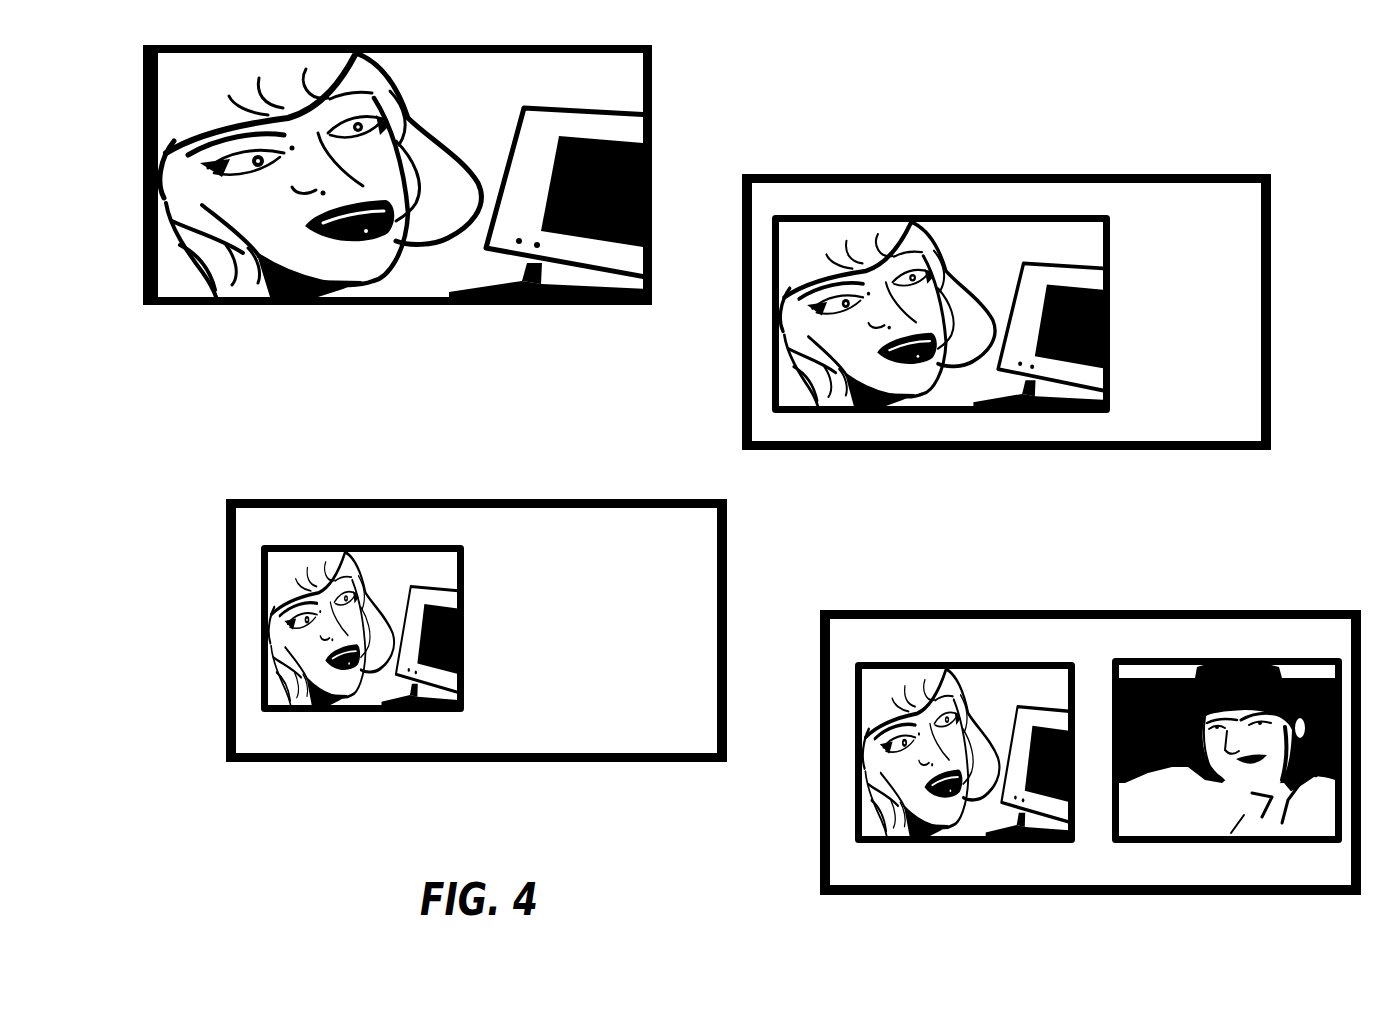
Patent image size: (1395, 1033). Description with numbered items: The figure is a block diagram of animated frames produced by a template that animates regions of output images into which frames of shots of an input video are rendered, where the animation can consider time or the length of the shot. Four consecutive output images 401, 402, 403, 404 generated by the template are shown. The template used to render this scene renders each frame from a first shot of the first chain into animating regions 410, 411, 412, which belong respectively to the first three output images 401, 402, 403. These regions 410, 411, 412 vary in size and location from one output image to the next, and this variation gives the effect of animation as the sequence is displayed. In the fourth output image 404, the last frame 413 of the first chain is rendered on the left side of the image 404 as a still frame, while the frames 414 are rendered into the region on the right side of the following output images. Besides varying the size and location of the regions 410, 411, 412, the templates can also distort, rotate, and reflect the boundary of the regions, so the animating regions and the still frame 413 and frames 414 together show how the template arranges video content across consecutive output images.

The output image 401 is at (143, 202).
The animating region 410 is at (252, 284).
The output image 402 is at (742, 342).
The animating region 411 is at (781, 413).
The output image 403 is at (226, 682).
The animating region 412 is at (418, 712).
The output image 404 is at (820, 785).
The last frame 413 is at (1008, 843).
The frames 414 is at (1257, 843).